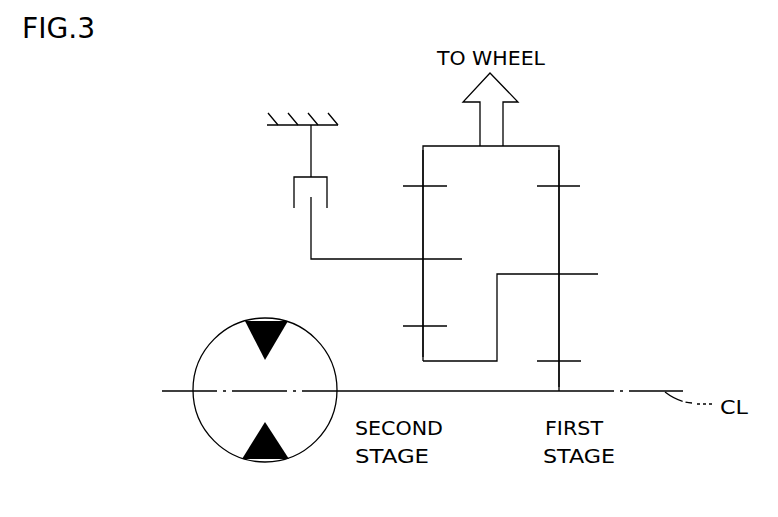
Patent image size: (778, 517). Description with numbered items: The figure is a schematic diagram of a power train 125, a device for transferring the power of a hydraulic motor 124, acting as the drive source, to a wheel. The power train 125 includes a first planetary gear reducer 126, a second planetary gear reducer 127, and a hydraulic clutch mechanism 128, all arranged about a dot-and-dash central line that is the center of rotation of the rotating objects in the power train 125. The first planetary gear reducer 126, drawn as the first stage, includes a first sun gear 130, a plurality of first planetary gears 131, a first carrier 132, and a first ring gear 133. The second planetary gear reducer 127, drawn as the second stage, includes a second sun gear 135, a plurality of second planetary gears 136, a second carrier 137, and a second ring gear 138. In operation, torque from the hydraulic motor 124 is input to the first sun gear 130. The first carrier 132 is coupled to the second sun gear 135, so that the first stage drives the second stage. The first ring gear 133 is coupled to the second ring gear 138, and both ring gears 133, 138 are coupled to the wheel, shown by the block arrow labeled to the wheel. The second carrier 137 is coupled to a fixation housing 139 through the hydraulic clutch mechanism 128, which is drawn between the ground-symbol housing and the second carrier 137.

The hydraulic motor 124 is at (228, 328).
The power train 125 is at (486, 432).
The first planetary gear reducer 126 is at (588, 214).
The second planetary gear reducer 127 is at (402, 157).
The hydraulic clutch mechanism 128 is at (294, 190).
The first sun gear 130 is at (559, 378).
The first planetary gears 131 is at (559, 297).
The first carrier 132 is at (598, 274).
The first ring gear 133 is at (541, 146).
The second sun gear 135 is at (423, 345).
The second planetary gears 136 is at (423, 222).
The second carrier 137 is at (363, 262).
The second ring gear 138 is at (432, 146).
The fixation housing 139 is at (270, 130).